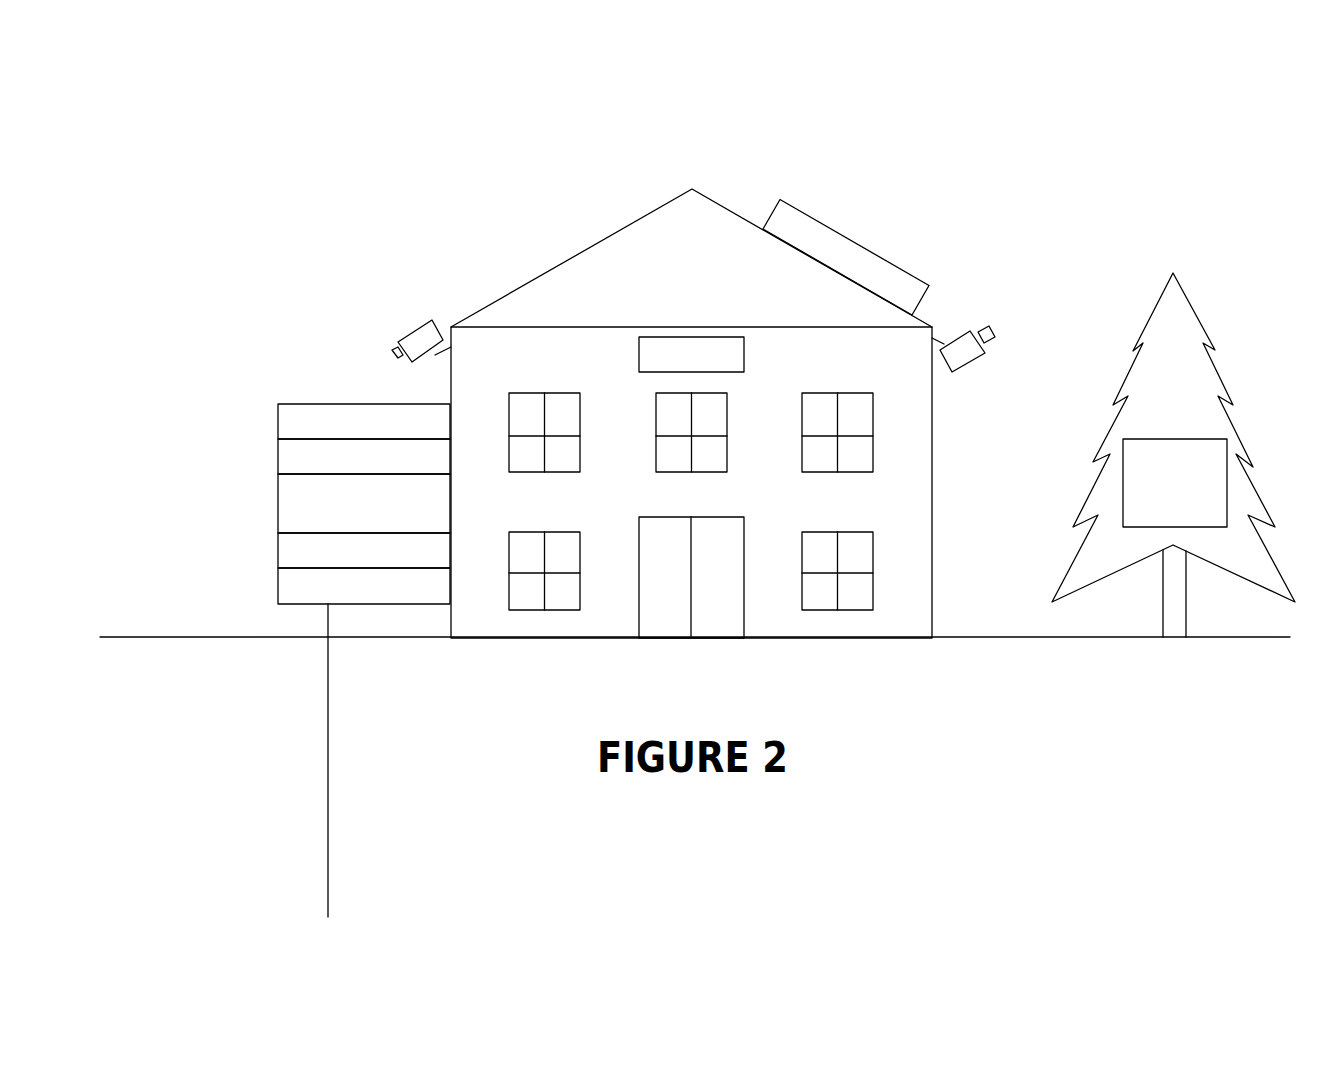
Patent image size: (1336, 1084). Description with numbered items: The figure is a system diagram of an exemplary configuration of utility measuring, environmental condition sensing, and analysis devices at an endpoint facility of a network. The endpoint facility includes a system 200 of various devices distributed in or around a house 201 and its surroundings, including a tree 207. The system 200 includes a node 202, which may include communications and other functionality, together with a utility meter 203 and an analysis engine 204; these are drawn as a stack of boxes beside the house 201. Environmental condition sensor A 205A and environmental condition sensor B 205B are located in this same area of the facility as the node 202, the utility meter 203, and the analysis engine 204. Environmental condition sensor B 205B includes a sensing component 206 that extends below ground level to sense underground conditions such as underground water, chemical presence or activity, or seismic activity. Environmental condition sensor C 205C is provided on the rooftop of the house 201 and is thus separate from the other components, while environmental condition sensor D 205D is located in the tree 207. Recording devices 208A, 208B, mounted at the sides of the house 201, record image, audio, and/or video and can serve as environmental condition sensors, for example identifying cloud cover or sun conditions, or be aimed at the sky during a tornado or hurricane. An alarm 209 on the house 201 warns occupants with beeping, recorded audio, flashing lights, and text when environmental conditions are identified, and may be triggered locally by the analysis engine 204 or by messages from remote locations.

The system 200 is at (302, 165).
The house 201 is at (545, 270).
The node 202 is at (278, 424).
The utility meter 203 is at (278, 458).
The analysis engine 204 is at (278, 508).
The environmental condition sensor A 205A is at (278, 553).
The environmental condition sensor B 205B is at (278, 590).
The environmental condition sensor C 205C is at (833, 230).
The environmental condition sensor D 205D is at (1123, 487).
The sensing component 206 is at (328, 768).
The tree 207 is at (1198, 312).
The recording device 208A is at (416, 322).
The recording device 208B is at (997, 338).
The alarm 209 is at (690, 327).